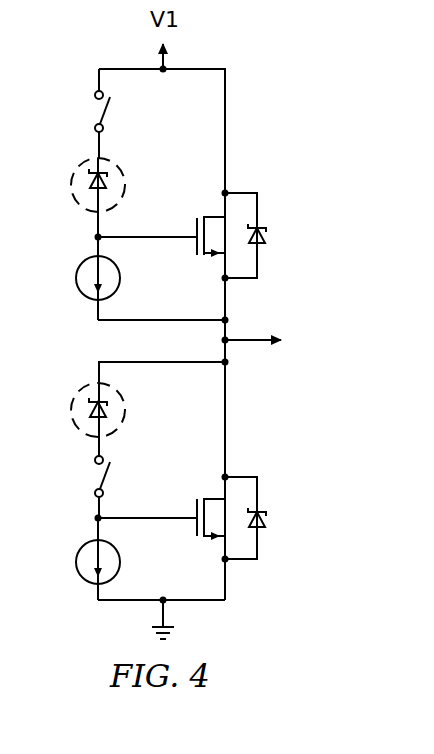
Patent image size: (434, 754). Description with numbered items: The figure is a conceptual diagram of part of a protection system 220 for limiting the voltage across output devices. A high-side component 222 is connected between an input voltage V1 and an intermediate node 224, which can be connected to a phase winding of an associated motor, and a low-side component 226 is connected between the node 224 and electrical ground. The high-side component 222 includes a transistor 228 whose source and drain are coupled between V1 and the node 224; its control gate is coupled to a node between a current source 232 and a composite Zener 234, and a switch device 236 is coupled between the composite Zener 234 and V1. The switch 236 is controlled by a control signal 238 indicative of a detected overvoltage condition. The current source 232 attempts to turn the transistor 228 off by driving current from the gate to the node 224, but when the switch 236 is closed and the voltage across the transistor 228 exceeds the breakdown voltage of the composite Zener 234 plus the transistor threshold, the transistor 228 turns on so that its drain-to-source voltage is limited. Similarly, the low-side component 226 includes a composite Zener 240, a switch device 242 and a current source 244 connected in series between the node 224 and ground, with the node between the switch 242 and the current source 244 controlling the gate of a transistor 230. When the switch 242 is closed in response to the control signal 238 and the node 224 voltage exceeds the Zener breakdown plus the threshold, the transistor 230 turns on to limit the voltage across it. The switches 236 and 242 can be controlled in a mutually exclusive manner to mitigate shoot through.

The system 220 is at (299, 66).
The high-side component 222 is at (252, 174).
The intermediate node 224 is at (250, 348).
The low-side component 226 is at (250, 577).
The transistor 228 is at (265, 232).
The transistor 230 is at (265, 518).
The current source 232 is at (87, 259).
The composite Zener 234 is at (76, 164).
The switch device 236 is at (107, 108).
The control signal 238 is at (86, 111).
The composite Zener 240 is at (76, 391).
The switch device 242 is at (107, 475).
The current source 244 is at (85, 578).